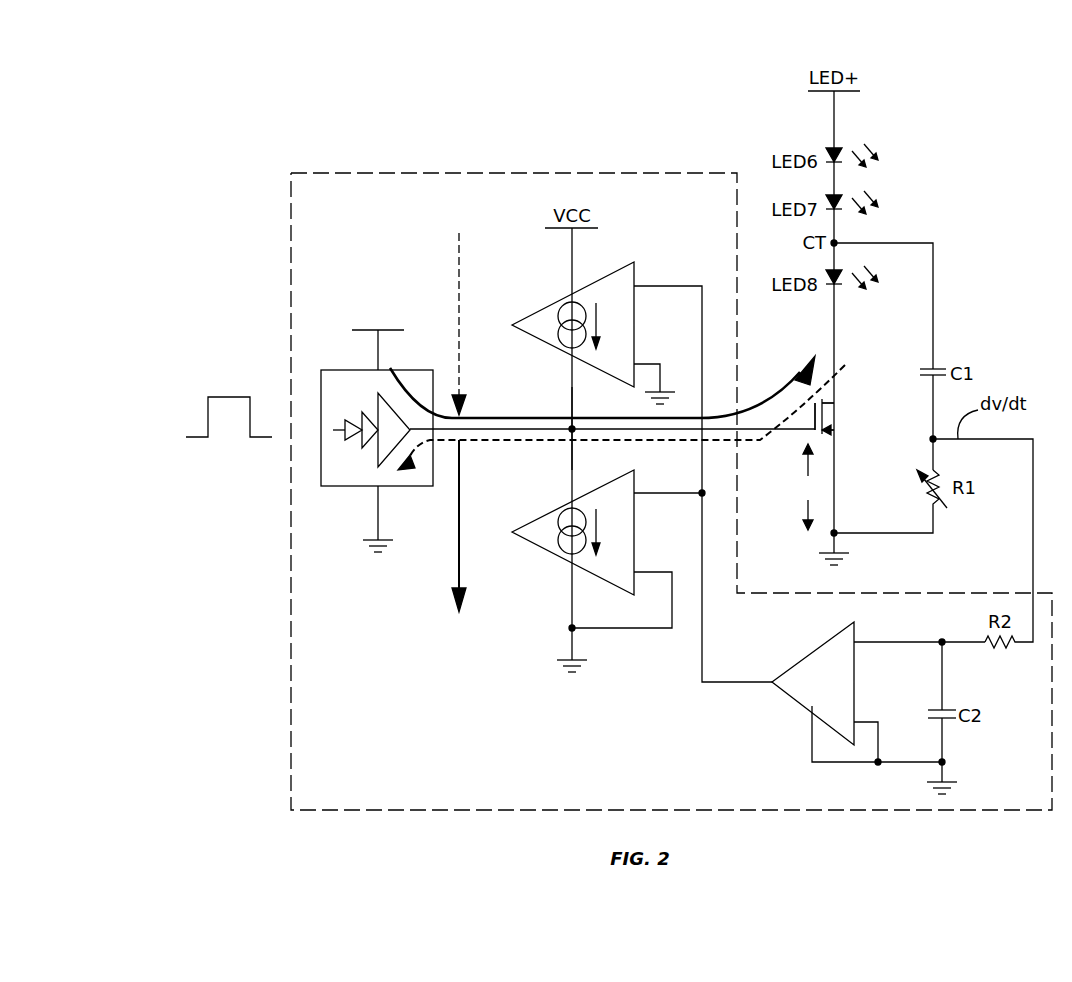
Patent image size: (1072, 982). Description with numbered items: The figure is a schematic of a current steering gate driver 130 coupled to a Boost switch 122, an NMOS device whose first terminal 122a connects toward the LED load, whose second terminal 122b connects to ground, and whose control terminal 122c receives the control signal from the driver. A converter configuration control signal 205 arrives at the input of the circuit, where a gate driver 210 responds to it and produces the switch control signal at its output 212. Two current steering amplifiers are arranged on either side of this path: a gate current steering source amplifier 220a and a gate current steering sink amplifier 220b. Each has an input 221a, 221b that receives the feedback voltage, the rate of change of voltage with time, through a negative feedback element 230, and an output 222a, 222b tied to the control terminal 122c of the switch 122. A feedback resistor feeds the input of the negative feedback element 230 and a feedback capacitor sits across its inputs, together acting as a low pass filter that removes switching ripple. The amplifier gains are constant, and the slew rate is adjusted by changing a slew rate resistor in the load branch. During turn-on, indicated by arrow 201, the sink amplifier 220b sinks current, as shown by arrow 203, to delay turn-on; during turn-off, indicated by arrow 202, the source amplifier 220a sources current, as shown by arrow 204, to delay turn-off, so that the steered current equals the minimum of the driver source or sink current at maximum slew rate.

The current steering gate driver 130 is at (462, 173).
The converter configuration control signal 205 is at (228, 397).
The gate driver 210 is at (328, 487).
The arrow 204 is at (457, 282).
The arrow 203 is at (457, 576).
The arrow 201 is at (765, 410).
The arrow 202 is at (415, 452).
The output 212 is at (488, 442).
The gate current steering source amplifier 220a is at (530, 314).
The input 221a is at (672, 285).
The output 222a is at (570, 403).
The gate current steering sink amplifier 220b is at (532, 545).
The input 221b is at (660, 496).
The output 222b is at (572, 450).
The negative feedback element 230 is at (795, 702).
The Boost switch 122 is at (836, 426).
The first terminal 122a is at (836, 392).
The second terminal 122b is at (836, 450).
The control terminal 122c is at (790, 432).